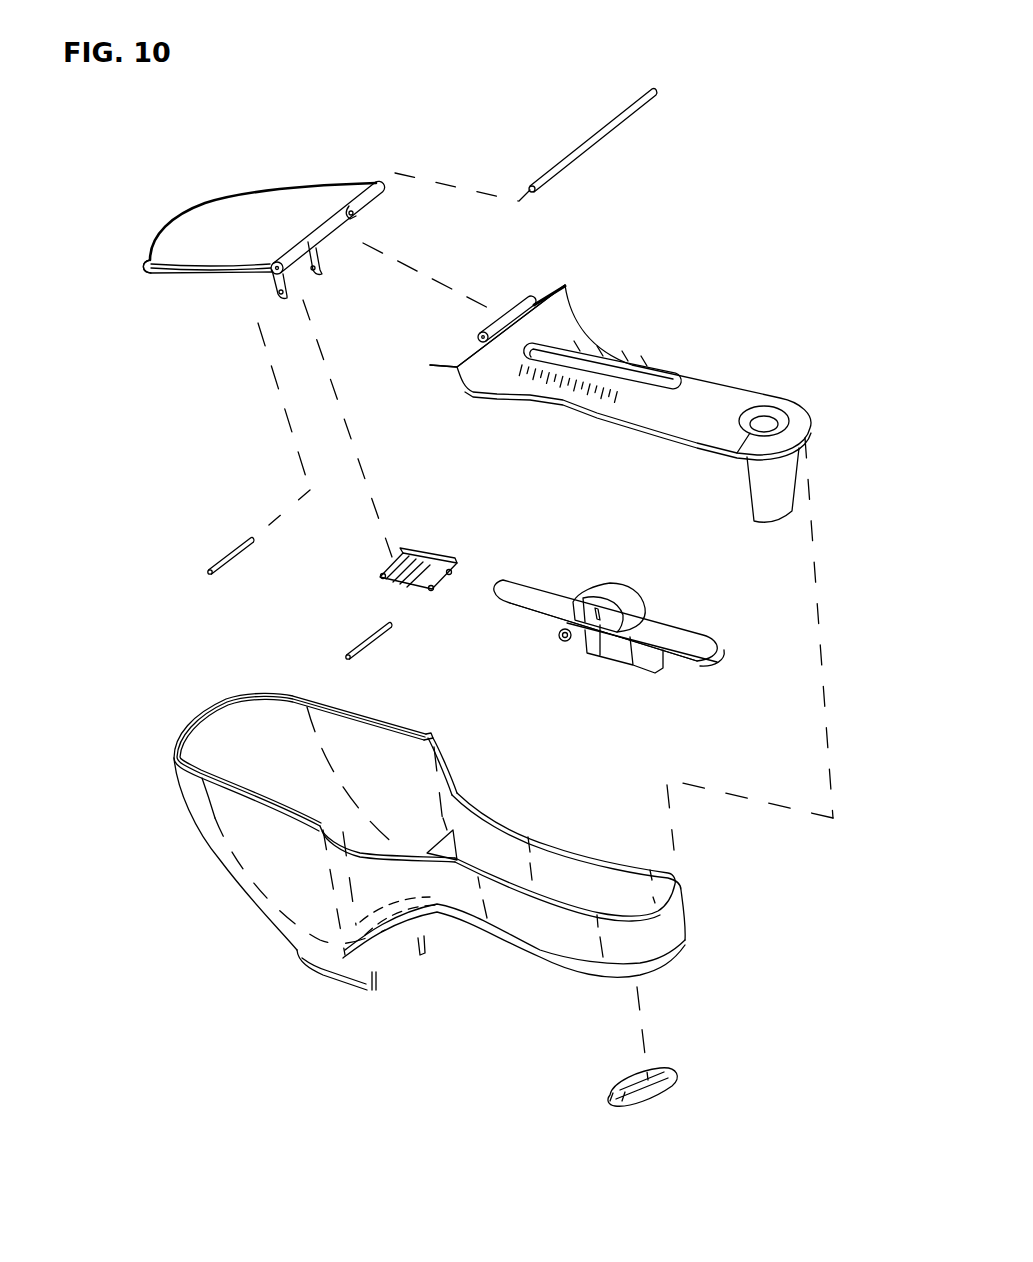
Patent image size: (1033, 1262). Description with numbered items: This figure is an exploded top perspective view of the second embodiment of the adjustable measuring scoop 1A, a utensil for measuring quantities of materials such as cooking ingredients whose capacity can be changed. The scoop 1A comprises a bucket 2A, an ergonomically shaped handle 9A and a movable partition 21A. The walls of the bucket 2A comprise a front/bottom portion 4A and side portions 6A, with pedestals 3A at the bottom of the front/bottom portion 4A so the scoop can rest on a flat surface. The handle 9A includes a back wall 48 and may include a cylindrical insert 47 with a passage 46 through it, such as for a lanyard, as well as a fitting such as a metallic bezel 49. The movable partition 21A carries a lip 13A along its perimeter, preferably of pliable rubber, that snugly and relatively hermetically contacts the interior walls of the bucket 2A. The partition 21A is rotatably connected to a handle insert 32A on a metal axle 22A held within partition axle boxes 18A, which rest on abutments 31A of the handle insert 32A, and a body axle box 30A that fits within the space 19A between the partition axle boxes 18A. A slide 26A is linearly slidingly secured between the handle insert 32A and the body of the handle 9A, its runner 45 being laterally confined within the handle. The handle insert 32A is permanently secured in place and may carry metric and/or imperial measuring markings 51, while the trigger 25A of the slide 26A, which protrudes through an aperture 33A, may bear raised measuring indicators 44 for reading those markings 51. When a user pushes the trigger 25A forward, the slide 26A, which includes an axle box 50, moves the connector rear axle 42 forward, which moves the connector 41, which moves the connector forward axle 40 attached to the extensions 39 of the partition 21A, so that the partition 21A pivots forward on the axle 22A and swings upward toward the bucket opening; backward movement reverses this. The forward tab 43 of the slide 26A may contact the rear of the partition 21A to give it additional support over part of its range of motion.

The scoop 1A is at (377, 896).
The bucket 2A is at (205, 819).
The pedestals 3A is at (353, 984).
The front/bottom portion 4A is at (238, 878).
The side portions 6A is at (270, 855).
The handle 9A is at (537, 918).
The lip 13A is at (148, 262).
The partition axle boxes 18A is at (370, 186).
The space 19A is at (328, 228).
The movable partition 21A is at (247, 230).
The axle 22A is at (629, 109).
The trigger 25A is at (632, 603).
The slide 26A is at (693, 637).
The body axle box 30A is at (537, 303).
The abutments 31A is at (462, 364).
The handle insert 32A is at (619, 393).
The aperture 33A is at (627, 363).
The extensions 39 is at (269, 289).
The connector forward axle 40 is at (210, 566).
The connector 41 is at (422, 566).
The connector rear axle 42 is at (352, 648).
The forward tab 43 is at (655, 628).
The measuring indicators 44 is at (595, 612).
The runner 45 is at (640, 660).
The passage 46 is at (769, 425).
The cylindrical insert 47 is at (767, 485).
The back wall 48 is at (395, 945).
The metallic bezel 49 is at (676, 1081).
The axle box 50 is at (564, 642).
The measuring markings 51 is at (561, 383).